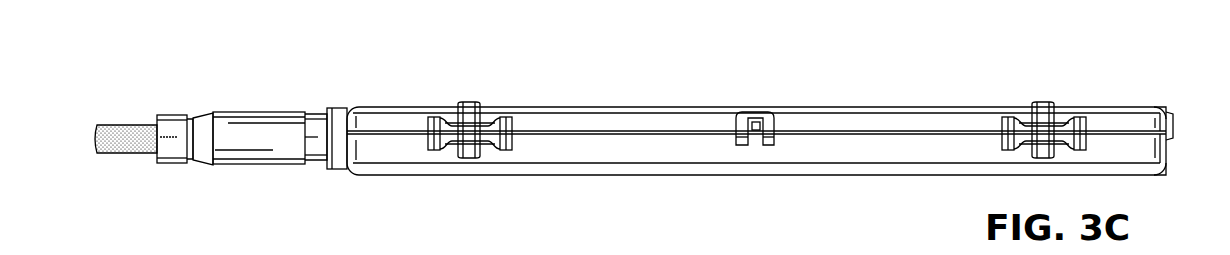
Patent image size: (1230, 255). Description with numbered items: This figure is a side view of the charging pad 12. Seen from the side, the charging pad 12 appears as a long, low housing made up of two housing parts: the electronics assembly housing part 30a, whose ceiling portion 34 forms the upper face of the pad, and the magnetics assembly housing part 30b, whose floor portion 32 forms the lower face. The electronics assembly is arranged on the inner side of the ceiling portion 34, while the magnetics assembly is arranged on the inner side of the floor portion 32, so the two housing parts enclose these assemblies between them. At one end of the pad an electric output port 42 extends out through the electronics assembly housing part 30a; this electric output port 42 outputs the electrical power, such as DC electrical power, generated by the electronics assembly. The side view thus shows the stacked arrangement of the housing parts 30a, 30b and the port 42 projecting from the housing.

The charging pad 12 is at (944, 78).
The electronics assembly housing part 30a is at (1170, 103).
The magnetics assembly housing part 30b is at (1170, 180).
The floor portion 32 is at (796, 177).
The ceiling portion 34 is at (843, 107).
The electric output port 42 is at (262, 112).